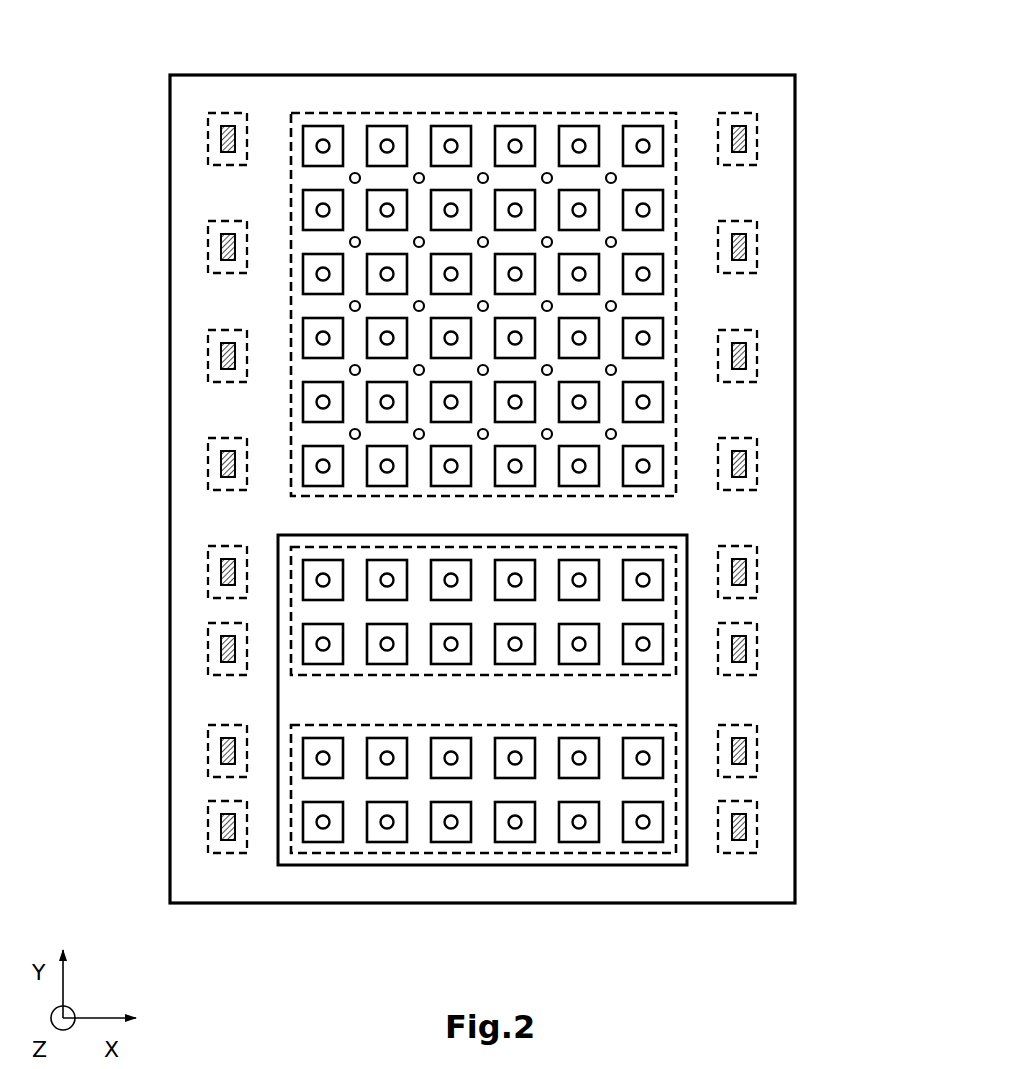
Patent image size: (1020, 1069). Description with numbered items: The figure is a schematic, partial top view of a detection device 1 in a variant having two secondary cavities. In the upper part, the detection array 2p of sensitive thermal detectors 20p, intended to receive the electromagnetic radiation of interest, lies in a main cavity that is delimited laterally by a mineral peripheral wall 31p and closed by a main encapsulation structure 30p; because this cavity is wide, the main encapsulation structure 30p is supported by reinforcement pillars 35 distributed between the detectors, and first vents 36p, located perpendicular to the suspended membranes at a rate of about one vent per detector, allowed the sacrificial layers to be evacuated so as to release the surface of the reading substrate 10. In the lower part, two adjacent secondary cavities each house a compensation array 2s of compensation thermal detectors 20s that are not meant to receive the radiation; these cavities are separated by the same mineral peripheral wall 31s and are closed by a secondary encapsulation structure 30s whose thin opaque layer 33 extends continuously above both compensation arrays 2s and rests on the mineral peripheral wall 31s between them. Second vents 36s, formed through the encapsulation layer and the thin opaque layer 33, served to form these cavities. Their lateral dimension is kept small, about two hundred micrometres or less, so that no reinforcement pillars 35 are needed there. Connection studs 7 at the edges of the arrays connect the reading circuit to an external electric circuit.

The detection device 1 is at (117, 76).
The detection array 2p is at (361, 120).
The compensation array 2s is at (666, 562).
The connection studs 7 is at (220, 140).
The reading substrate 10 is at (799, 298).
The sensitive thermal detectors 20p is at (665, 464).
The compensation thermal detectors 20s is at (666, 578).
The main encapsulation structure 30p is at (198, 315).
The secondary encapsulation structure 30s is at (208, 712).
The mineral peripheral wall 31p is at (200, 303).
The mineral peripheral wall 31s is at (222, 610).
The thin opaque layer 33 is at (276, 700).
The reinforcement pillars 35 is at (611, 168).
The first vents 36p is at (514, 137).
The second vents 36s is at (323, 834).